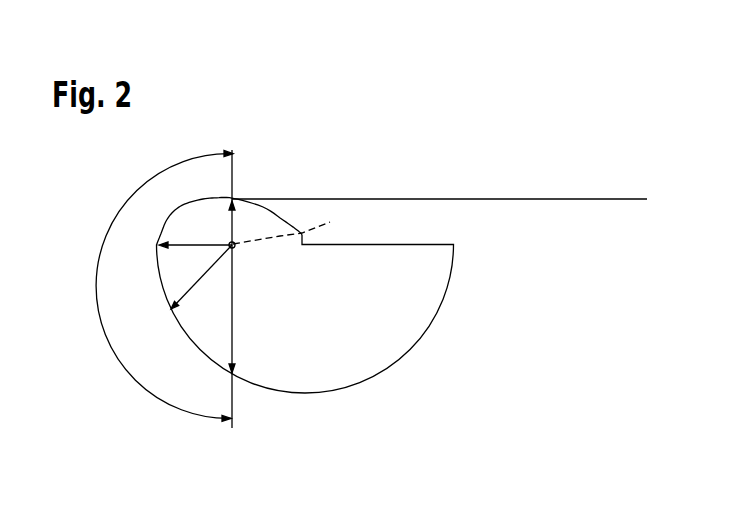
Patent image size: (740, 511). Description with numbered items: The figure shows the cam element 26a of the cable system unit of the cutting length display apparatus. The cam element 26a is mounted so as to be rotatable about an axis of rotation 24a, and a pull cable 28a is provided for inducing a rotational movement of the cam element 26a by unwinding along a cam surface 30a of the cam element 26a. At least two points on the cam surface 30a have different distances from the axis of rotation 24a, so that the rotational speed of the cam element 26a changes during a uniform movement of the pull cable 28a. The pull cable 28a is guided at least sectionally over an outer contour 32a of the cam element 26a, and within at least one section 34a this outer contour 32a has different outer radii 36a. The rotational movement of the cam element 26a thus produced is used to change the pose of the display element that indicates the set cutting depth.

The axis of rotation 24a is at (300, 227).
The cam element 26a is at (365, 362).
The pull cable 28a is at (521, 199).
The cam surface 30a is at (234, 199).
The outer contour 32a is at (268, 389).
The section 34a is at (118, 362).
The outer radii 36a is at (200, 279).